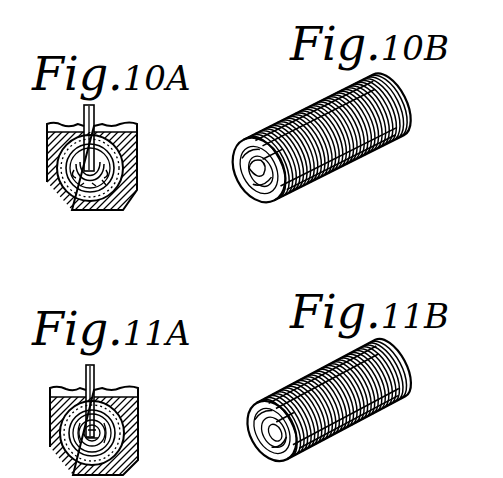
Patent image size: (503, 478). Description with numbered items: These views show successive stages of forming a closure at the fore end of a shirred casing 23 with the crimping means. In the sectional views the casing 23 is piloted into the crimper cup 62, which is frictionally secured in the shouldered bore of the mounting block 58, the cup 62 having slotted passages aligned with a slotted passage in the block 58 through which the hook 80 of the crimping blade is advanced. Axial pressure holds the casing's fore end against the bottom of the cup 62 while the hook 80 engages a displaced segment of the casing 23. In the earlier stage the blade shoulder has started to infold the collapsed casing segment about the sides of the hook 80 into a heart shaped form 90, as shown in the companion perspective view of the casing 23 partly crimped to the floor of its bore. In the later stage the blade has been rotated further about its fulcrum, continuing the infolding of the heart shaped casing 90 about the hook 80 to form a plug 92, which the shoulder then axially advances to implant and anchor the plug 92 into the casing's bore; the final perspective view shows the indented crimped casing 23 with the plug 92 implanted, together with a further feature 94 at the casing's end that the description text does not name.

In FIG. 10B, the casing 23 is at (313, 104).
In FIG. 11B, the casing 23 is at (327, 361).
In FIG. 10A, the mounting block 58 is at (56, 167).
In FIG. 11A, the mounting block 58 is at (53, 438).
In FIG. 10A, the crimper cup 62 is at (125, 168).
In FIG. 11A, the crimper cup 62 is at (127, 438).
In FIG. 10A, the hook 80 is at (94, 122).
In FIG. 11A, the hook 80 is at (96, 383).
In FIG. 10A, the heart shaped form 90 is at (72, 170).
In FIG. 10B, the heart shaped form 90 is at (243, 178).
In FIG. 11A, the plug 92 is at (72, 436).
In FIG. 11B, the plug 92 is at (256, 400).
In FIG. 11B, the inner coil end 94 is at (250, 444).